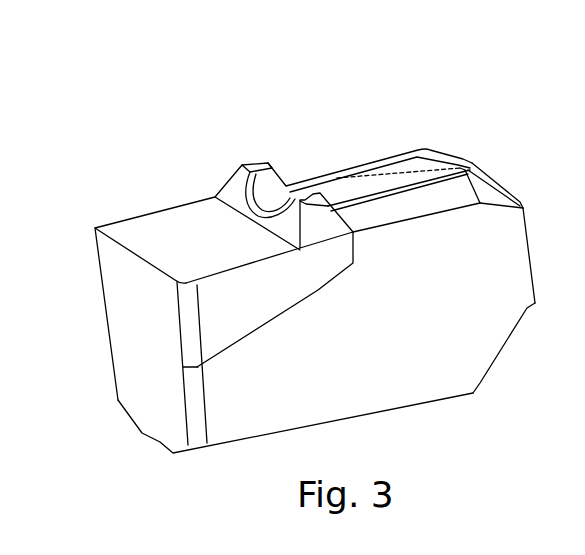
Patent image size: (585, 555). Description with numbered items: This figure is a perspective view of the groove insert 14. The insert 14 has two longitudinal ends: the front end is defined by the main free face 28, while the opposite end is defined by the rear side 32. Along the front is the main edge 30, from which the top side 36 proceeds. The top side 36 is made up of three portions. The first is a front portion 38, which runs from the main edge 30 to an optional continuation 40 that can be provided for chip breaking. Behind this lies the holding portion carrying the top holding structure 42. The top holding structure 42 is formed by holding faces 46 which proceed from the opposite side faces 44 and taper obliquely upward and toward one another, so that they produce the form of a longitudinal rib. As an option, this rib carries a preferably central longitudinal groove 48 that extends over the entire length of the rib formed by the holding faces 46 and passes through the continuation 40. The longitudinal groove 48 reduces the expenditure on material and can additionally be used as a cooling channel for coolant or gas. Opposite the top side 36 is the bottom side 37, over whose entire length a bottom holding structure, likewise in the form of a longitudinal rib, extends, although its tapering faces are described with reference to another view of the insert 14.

The insert 14 is at (201, 130).
The main free face 28 is at (128, 355).
The main edge 30 is at (123, 248).
The rear side 32 is at (528, 198).
The top side 36 is at (318, 130).
The bottom side 37 is at (440, 403).
The front portion 38 is at (152, 225).
The continuation 40 is at (257, 158).
The top holding structure 42 is at (390, 147).
The side faces 44 is at (478, 338).
The holding faces 46 is at (418, 200).
The longitudinal groove 48 is at (423, 162).